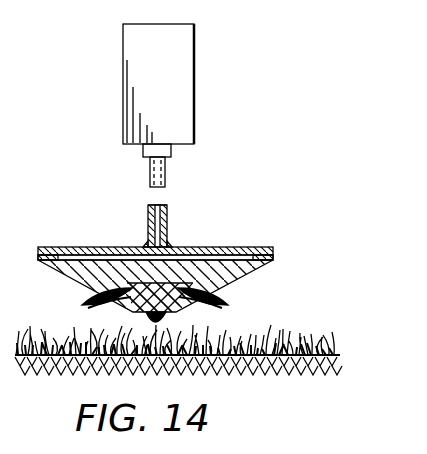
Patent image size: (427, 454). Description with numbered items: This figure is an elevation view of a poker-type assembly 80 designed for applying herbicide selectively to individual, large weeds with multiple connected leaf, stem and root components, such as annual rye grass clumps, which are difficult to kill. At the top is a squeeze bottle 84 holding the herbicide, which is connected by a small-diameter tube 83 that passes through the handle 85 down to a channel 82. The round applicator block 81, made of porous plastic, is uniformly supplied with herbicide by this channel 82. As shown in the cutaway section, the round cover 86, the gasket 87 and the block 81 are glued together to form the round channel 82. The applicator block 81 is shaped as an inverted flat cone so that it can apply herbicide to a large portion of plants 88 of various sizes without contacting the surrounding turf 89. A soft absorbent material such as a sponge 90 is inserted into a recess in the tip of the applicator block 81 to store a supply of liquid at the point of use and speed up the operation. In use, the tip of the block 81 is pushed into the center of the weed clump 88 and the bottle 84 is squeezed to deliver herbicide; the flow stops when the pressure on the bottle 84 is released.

The poker-type assembly 80 is at (162, 194).
The applicator block 81 is at (260, 268).
The channel 82 is at (229, 248).
The small-diameter tube 83 is at (181, 216).
The squeeze bottle 84 is at (195, 72).
The handle 85 is at (166, 209).
The round cover 86 is at (273, 248).
The gasket 87 is at (273, 257).
The plants 88 is at (97, 302).
The turf 89 is at (13, 326).
The sponge 90 is at (216, 288).